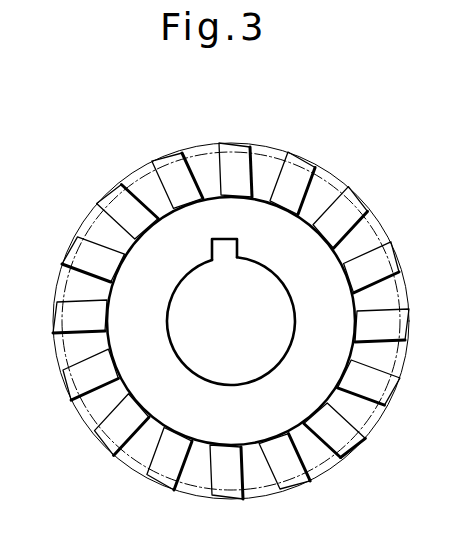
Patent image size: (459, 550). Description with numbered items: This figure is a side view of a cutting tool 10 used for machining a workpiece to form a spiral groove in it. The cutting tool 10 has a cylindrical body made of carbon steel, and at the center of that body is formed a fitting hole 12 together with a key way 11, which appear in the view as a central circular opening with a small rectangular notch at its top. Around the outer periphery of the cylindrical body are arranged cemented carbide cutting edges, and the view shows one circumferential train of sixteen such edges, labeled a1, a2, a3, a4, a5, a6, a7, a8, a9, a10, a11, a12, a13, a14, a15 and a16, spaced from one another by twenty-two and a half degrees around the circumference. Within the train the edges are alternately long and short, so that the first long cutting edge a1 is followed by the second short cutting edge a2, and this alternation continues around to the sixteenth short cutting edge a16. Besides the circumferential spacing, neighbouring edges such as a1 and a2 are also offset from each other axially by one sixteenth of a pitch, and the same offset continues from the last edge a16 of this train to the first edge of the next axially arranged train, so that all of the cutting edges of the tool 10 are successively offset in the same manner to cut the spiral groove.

The cutting tool 10 is at (337, 168).
The key way 11 is at (227, 248).
The fitting hole 12 is at (290, 328).
The first long cutting edge a1 is at (229, 147).
The second short cutting edge a2 is at (288, 168).
The cutting edge a3 is at (354, 198).
The cutting edge a4 is at (386, 263).
The cutting edge a5 is at (405, 314).
The cutting edge a6 is at (383, 398).
The cutting edge a7 is at (354, 450).
The cutting edge a8 is at (293, 478).
The cutting edge a9 is at (234, 499).
The cutting edge a10 is at (168, 463).
The cutting edge a11 is at (111, 448).
The cutting edge a12 is at (82, 383).
The cutting edge a13 is at (62, 325).
The cutting edge a14 is at (88, 254).
The cutting edge a15 is at (108, 197).
The 16th short cutting edge a16 is at (175, 170).